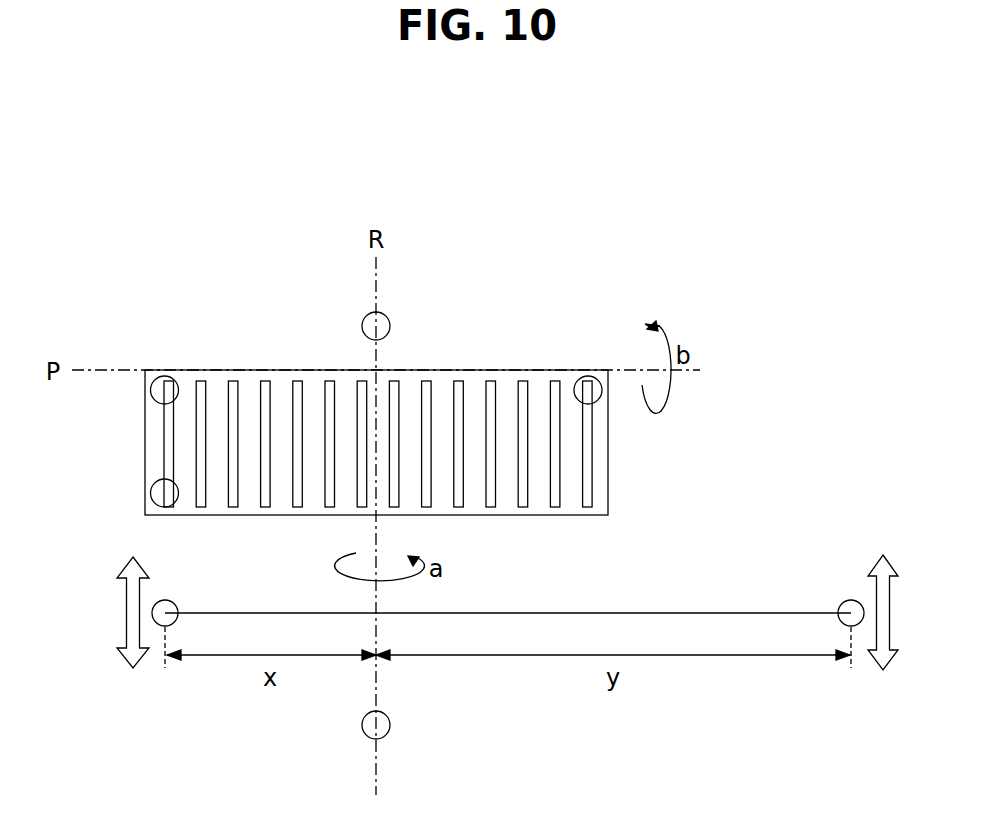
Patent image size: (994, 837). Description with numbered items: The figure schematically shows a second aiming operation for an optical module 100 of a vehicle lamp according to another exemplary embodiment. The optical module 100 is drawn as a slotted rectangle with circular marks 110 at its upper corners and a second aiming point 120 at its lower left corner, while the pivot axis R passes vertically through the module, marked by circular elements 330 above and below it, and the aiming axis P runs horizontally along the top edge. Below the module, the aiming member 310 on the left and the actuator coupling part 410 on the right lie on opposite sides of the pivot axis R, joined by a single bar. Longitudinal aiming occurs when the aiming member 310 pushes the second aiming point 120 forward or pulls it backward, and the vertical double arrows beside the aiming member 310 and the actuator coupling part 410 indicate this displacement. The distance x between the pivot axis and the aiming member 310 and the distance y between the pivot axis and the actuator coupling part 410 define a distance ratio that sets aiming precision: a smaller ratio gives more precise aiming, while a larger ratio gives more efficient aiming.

The optical module 100 is at (454, 370).
The alignment mark 110 is at (163, 378).
The second aiming point 120 is at (151, 493).
The aiming member 310 is at (166, 600).
The rotation center pin 330 is at (388, 318).
The actuator coupling part 410 is at (845, 600).